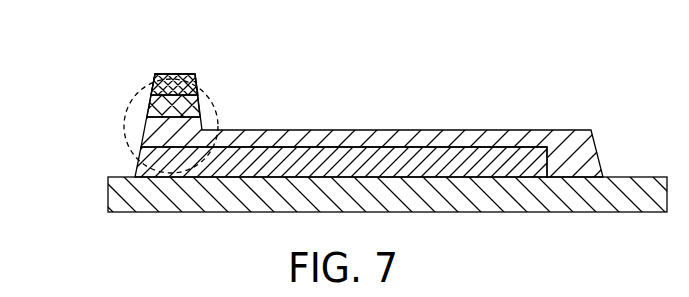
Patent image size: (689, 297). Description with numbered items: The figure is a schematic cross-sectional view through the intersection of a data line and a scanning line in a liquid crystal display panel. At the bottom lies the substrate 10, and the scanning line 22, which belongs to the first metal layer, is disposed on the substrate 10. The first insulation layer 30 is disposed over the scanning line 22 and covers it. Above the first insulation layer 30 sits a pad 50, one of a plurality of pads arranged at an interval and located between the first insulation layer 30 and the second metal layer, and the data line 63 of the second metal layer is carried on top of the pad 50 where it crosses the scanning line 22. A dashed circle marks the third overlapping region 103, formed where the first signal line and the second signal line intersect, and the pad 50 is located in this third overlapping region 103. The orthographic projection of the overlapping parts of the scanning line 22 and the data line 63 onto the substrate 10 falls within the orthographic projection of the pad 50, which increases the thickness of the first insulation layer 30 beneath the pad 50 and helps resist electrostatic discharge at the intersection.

The substrate 10 is at (127, 203).
The scanning line 22 is at (137, 168).
The first insulation layer 30 is at (143, 133).
The pad 50 is at (201, 97).
The data line 63 is at (180, 73).
The third overlapping region 103 is at (122, 100).